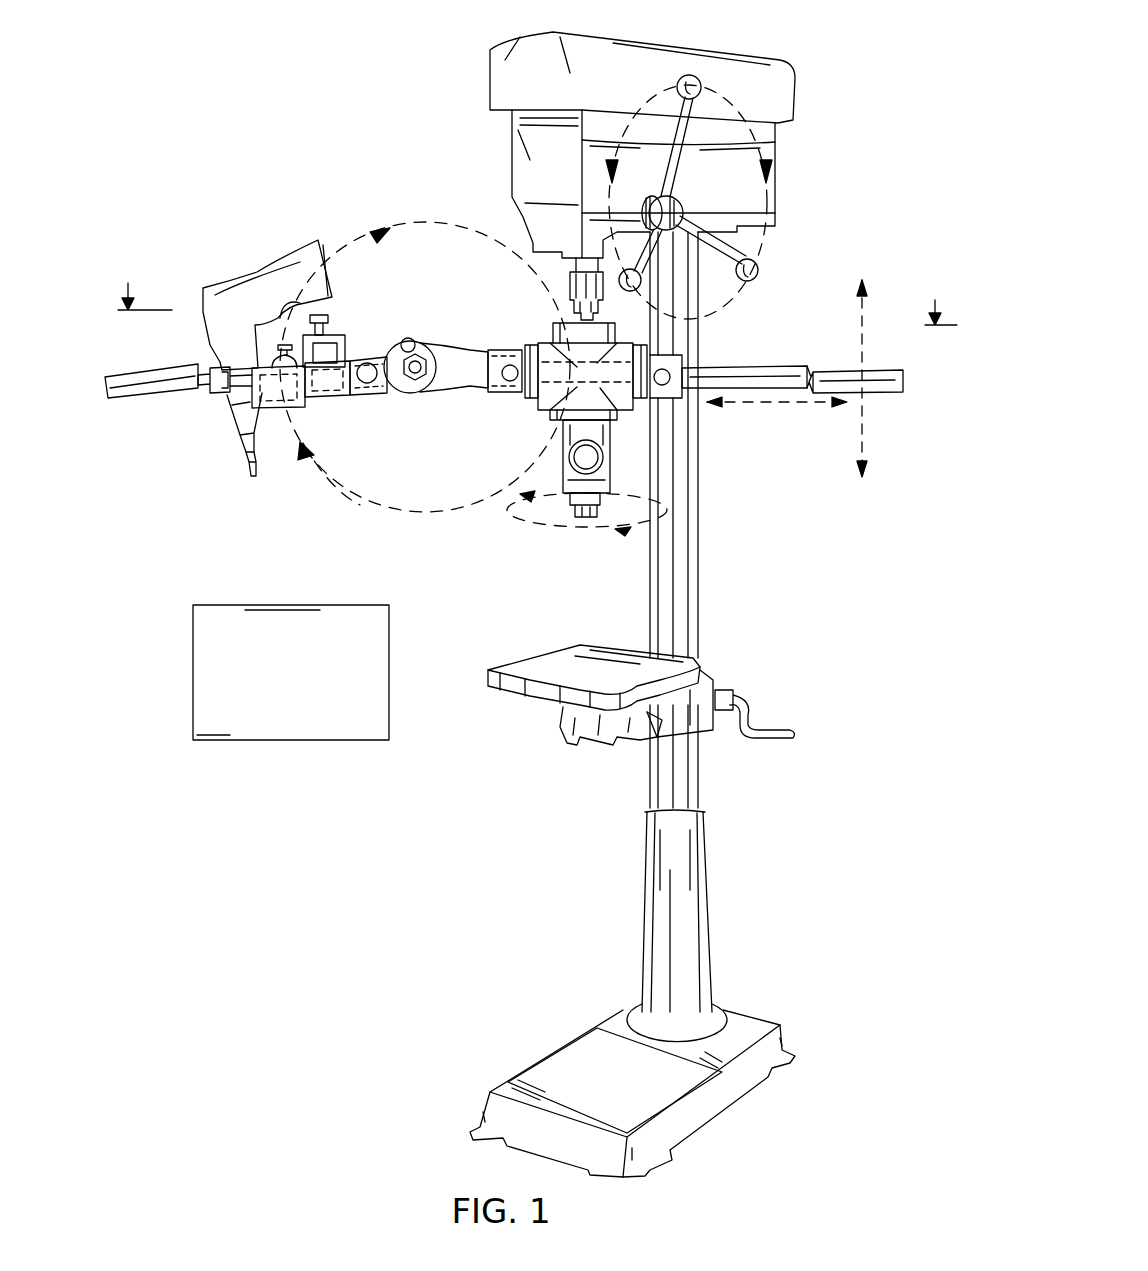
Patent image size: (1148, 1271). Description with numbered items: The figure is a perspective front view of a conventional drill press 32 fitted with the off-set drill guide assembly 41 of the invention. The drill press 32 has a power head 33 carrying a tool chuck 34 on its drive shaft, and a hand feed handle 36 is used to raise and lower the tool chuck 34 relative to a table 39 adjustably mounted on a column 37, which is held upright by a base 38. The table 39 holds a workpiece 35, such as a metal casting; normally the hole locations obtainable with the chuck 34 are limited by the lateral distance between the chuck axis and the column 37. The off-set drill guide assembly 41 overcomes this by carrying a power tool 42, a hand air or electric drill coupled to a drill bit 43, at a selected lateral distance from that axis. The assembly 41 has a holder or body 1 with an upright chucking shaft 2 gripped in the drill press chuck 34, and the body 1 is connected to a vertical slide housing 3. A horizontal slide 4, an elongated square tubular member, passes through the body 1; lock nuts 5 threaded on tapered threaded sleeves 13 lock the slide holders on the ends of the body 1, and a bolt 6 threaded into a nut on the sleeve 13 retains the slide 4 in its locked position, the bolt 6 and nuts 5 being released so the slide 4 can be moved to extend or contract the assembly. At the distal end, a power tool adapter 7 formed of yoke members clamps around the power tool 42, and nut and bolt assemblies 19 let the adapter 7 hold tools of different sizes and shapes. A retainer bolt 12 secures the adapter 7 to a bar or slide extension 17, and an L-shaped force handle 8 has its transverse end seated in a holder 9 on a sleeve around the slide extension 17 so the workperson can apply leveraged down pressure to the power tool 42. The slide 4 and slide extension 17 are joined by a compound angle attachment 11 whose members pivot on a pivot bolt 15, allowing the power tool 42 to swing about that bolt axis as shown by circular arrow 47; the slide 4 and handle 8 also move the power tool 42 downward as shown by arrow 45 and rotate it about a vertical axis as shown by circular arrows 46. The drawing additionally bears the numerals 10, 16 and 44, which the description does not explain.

The body 1 is at (540, 431).
The upright chucking shaft 2 is at (576, 328).
The vertical slide housing 3 is at (600, 434).
The horizontal slide 4 is at (482, 350).
The lock nuts 5 is at (533, 395).
The bolt 6 is at (673, 370).
The power tool adapter 7 is at (218, 392).
The L-shaped force handle 8 is at (138, 388).
The holder 9 is at (336, 336).
The bottom fitting 10 is at (586, 522).
The compound angle attachment 11 is at (440, 345).
The retainer bolt 12 is at (369, 385).
The tapered threaded sleeves 13 is at (670, 395).
The pivot bolt 15 is at (418, 378).
The pin 16 is at (408, 338).
The slide extension 17 is at (330, 388).
The nut and bolt assemblies 19 is at (256, 376).
The drill press 32 is at (799, 176).
The power head 33 is at (526, 162).
The tool chuck 34 is at (578, 293).
The workpiece 35 is at (222, 616).
The hand feed handle 36 is at (760, 268).
The column 37 is at (682, 600).
The base 38 is at (566, 1062).
The table 39 is at (552, 672).
The off-set drill guide assembly 41 is at (421, 524).
The power tool 42 is at (243, 293).
The drill bit 43 is at (253, 477).
The horizontal movement arrow 44 is at (757, 403).
The arrow 45 is at (865, 430).
The circular arrows 46 is at (540, 522).
The circular arrow 47 is at (353, 492).